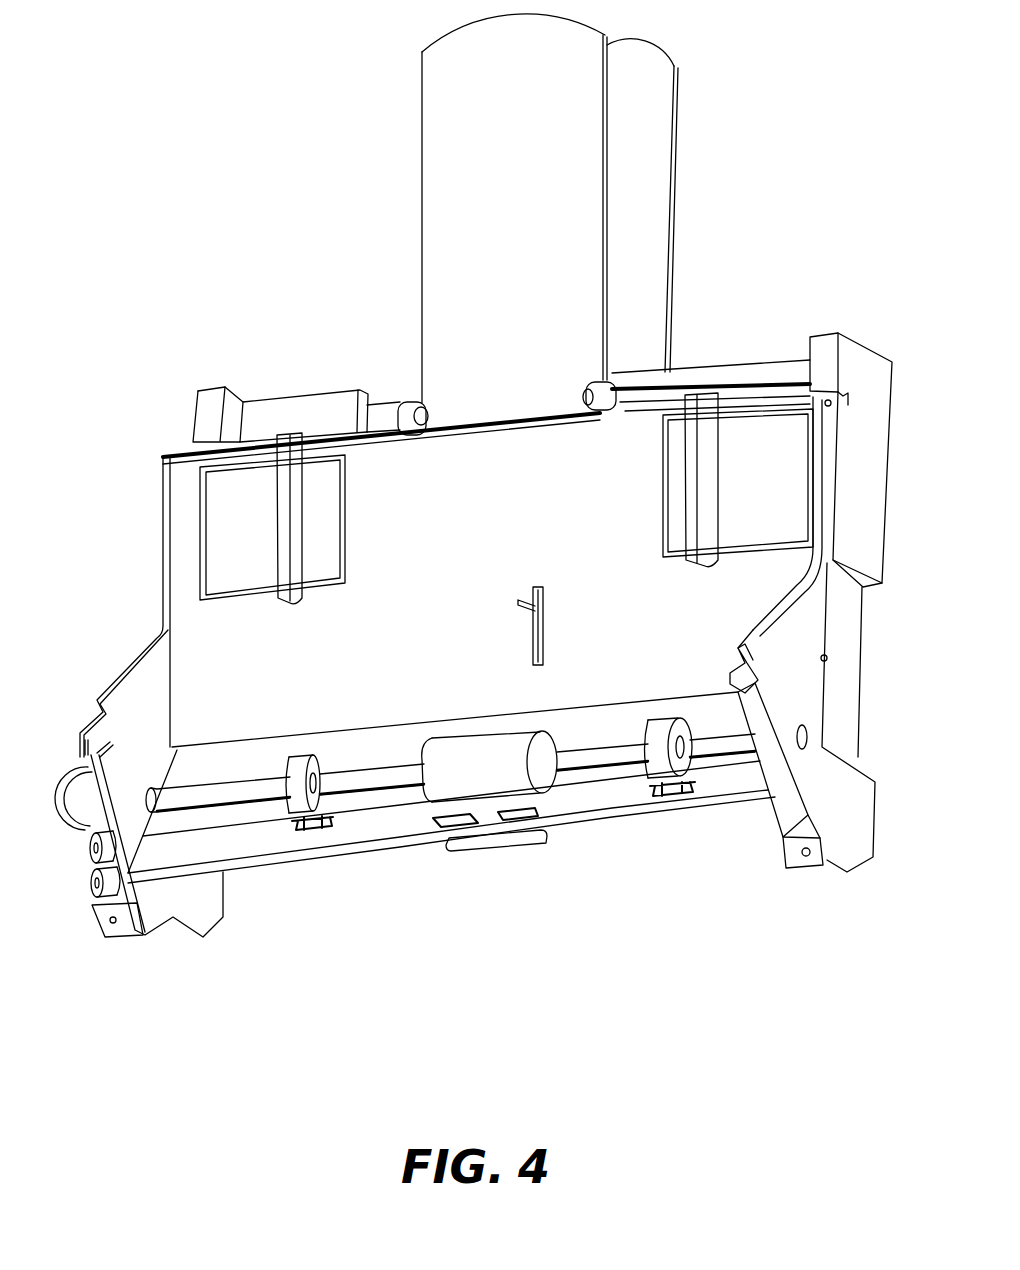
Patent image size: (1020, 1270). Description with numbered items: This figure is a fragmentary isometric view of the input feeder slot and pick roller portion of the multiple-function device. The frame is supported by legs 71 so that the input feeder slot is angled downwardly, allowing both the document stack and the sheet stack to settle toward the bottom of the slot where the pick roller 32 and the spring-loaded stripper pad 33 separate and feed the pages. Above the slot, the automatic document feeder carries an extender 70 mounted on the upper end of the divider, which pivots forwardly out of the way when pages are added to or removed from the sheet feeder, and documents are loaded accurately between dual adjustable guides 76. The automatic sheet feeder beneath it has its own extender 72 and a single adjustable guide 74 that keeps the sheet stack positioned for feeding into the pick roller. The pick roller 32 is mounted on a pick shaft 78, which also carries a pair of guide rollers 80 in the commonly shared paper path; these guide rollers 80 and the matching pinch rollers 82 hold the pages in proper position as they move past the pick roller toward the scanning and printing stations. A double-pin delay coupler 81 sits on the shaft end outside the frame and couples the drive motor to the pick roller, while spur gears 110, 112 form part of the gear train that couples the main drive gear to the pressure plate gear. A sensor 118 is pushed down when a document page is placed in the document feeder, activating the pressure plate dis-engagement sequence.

The extender 70 is at (485, 120).
The extender 72 is at (653, 152).
The adjustable guide 74 is at (236, 386).
The dual adjustable guides 76 is at (303, 507).
The sensor 118 is at (522, 600).
The pick roller 32 is at (480, 745).
The pick shaft 78 is at (612, 748).
The guide rollers 80 is at (298, 757).
The double-pin delay coupler 81 is at (77, 790).
The pinch rollers 82 is at (312, 832).
The spring-loaded stripper pad 33 is at (492, 820).
The legs 71 is at (845, 815).
The spur gear 112 is at (90, 855).
The spur gear 110 is at (95, 890).